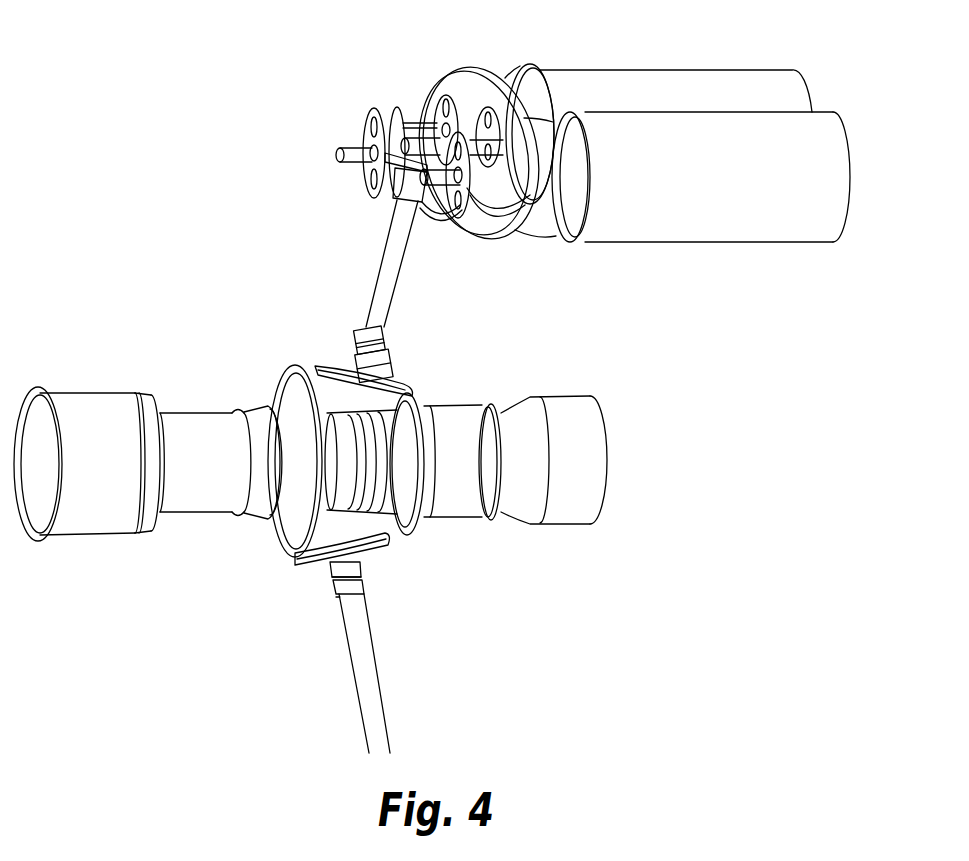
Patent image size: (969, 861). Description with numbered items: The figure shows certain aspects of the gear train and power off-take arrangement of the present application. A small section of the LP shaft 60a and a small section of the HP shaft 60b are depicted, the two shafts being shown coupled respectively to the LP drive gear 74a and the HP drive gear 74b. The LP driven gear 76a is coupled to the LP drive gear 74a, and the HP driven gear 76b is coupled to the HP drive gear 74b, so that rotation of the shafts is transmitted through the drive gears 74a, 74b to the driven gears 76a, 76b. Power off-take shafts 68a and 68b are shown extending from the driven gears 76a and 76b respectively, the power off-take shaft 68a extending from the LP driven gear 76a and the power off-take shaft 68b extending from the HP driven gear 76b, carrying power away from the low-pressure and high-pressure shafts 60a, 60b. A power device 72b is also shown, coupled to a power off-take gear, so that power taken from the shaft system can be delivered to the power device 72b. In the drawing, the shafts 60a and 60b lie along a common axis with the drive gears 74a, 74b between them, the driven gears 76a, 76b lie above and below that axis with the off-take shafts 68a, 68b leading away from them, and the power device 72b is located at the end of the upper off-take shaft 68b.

The LP shaft 60a is at (78, 391).
The HP shaft 60b is at (567, 394).
The LP drive gear 74a is at (285, 369).
The HP drive gear 74b is at (426, 528).
The LP driven gear 76a is at (381, 548).
The HP driven gear 76b is at (323, 366).
The power off-take shaft 68a is at (379, 670).
The power off-take shaft 68b is at (381, 262).
The power device 72b is at (637, 70).